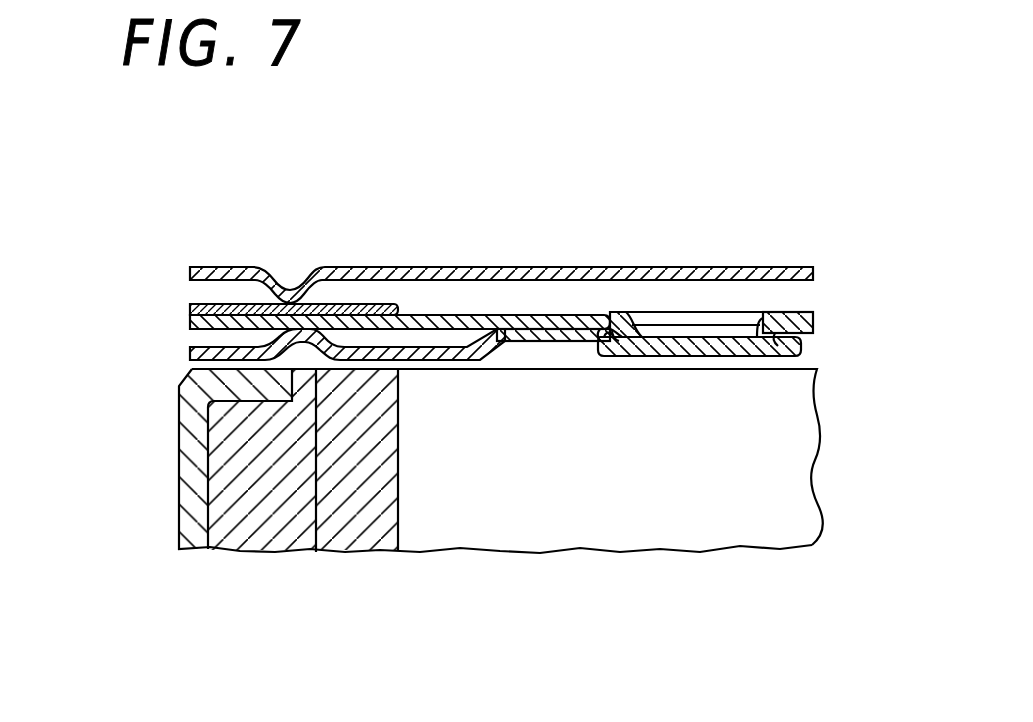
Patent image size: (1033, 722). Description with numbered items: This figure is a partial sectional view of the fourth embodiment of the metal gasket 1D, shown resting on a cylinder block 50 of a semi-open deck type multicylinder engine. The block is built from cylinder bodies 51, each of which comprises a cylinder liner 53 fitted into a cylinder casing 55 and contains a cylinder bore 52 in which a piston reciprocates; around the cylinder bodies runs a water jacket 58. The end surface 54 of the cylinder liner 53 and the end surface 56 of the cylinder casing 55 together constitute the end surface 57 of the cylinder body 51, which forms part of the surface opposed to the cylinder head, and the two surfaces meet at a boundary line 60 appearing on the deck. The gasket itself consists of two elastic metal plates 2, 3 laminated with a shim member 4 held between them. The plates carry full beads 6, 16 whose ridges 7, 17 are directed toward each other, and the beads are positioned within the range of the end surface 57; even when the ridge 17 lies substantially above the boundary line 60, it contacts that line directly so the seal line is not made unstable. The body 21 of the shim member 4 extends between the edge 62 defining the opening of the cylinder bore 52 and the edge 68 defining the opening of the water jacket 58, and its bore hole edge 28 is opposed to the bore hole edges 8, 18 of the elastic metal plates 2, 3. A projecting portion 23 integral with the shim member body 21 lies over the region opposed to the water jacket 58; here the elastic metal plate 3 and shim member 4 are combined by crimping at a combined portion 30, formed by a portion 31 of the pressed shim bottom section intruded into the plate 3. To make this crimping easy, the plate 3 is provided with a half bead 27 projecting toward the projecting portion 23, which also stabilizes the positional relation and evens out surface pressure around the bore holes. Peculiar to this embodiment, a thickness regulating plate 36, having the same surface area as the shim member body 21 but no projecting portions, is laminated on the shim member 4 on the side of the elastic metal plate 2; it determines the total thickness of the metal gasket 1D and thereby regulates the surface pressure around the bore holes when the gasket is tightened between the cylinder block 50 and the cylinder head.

The metal gasket 1D is at (686, 226).
The elastic metal plate 2 is at (604, 266).
The elastic metal plate 3 is at (488, 366).
The shim member 4 is at (609, 306).
The bead 6 is at (266, 267).
The ridge 7 is at (292, 290).
The bore hole edge 8 is at (177, 268).
The bead 16 is at (321, 481).
The ridge 17 is at (303, 342).
The bore hole edge 18 is at (190, 355).
The shim member body 21 is at (357, 312).
The projecting portion 23 is at (528, 316).
The half bead 27 is at (555, 333).
The bore hole edge 28 is at (190, 320).
The combined portion 30 is at (713, 333).
The intruded portion 31 is at (622, 355).
The thickness regulating plate 36 is at (351, 305).
The cylinder block 50 is at (172, 530).
The cylinder body 51 is at (355, 522).
The cylinder bore 52 is at (93, 460).
The cylinder liner 53 is at (192, 470).
The end surface of cylinder liner 54 is at (237, 369).
The cylinder casing 55 is at (383, 512).
The end surface of cylinder casing 56 is at (367, 372).
The end surface of cylinder body 57 is at (322, 267).
The water jacket 58 is at (638, 493).
The boundary line 60 is at (296, 368).
The edge defining opening of cylinder bore 62 is at (182, 373).
The edge defining opening of water jacket 68 is at (399, 372).